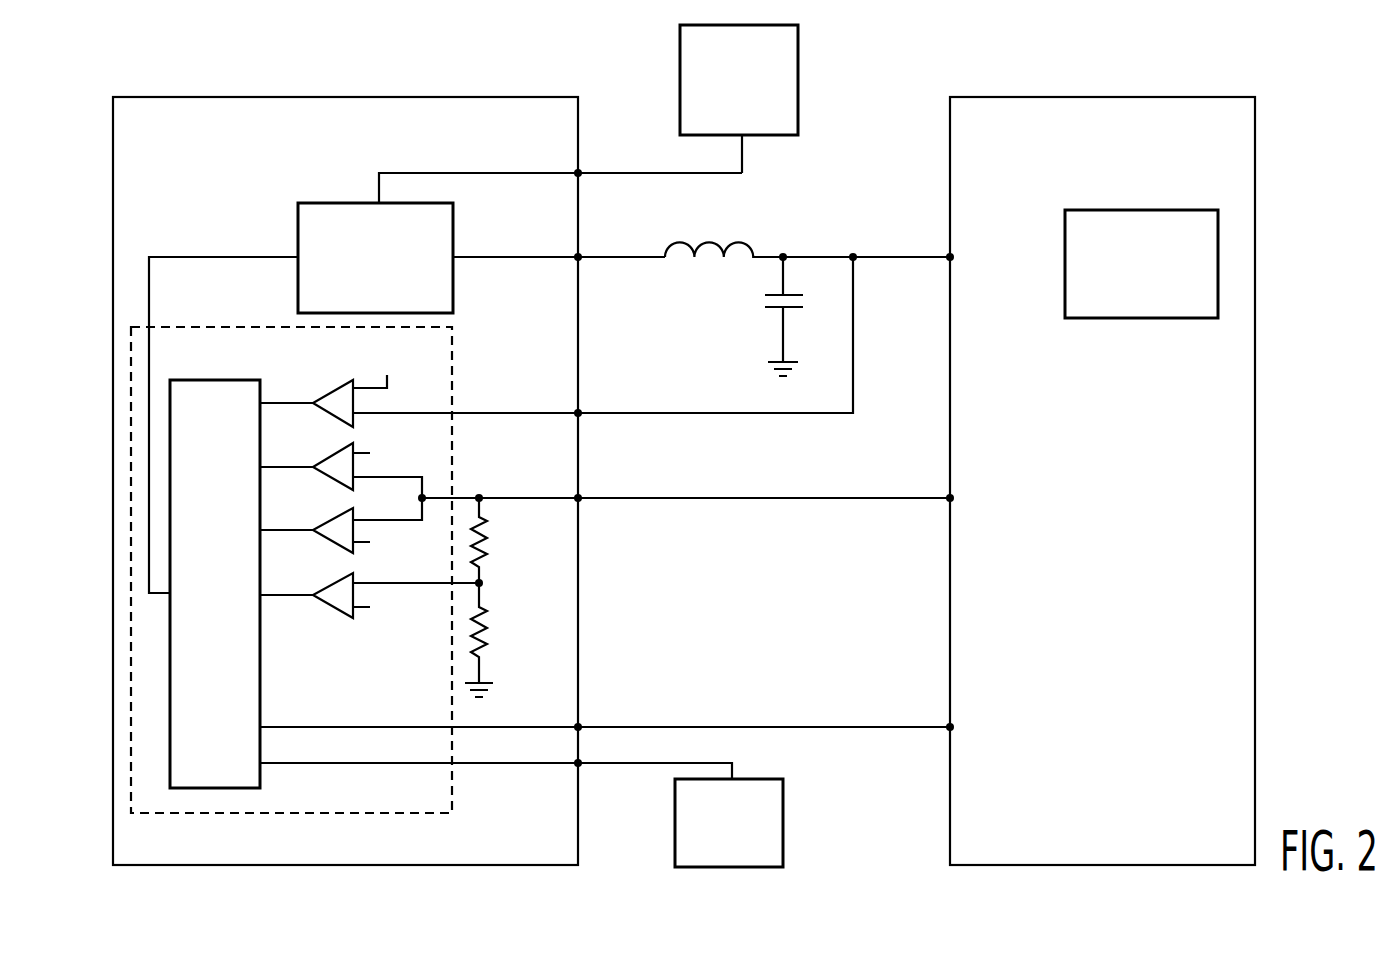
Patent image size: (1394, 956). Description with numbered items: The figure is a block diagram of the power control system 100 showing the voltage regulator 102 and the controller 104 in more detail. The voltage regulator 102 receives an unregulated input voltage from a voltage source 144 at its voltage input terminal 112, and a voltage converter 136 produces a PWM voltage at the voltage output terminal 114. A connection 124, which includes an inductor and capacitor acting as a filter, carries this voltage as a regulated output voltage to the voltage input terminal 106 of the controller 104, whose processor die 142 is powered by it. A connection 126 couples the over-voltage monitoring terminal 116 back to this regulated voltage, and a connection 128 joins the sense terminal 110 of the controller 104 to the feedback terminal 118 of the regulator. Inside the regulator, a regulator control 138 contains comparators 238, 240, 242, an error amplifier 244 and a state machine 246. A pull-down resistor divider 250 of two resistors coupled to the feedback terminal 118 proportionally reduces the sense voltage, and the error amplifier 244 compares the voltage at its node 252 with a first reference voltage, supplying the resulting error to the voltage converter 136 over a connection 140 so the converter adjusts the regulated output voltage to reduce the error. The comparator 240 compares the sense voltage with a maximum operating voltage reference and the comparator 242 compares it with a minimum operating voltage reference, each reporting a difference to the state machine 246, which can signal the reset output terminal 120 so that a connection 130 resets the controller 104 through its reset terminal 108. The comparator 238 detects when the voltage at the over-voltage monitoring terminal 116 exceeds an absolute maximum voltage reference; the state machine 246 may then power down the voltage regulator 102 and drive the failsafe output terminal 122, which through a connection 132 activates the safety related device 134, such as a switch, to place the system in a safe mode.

The power control system 100 is at (826, 102).
The voltage regulator 102 is at (157, 97).
The controller 104 is at (1215, 97).
The voltage input terminal 106 is at (952, 260).
The reset terminal 108 is at (952, 730).
The sense terminal 110 is at (952, 500).
The voltage input terminal 112 is at (576, 172).
The voltage output terminal 114 is at (580, 255).
The over-voltage monitoring terminal 116 is at (576, 411).
The feedback terminal 118 is at (576, 496).
The reset output terminal 120 is at (576, 725).
The failsafe output terminal 122 is at (576, 766).
The connection 124 is at (822, 257).
The connection 126 is at (828, 413).
The connection 128 is at (770, 499).
The connection 130 is at (820, 726).
The connection 132 is at (725, 762).
The safety related device 134 is at (746, 852).
The voltage converter 136 is at (397, 296).
The regulator control 138 is at (250, 327).
The connection 140 is at (200, 257).
The processor die 142 is at (1150, 318).
The voltage source 144 is at (760, 124).
The comparator 238 is at (348, 382).
The comparator 240 is at (340, 447).
The comparator 242 is at (340, 548).
The error amplifier 244 is at (340, 616).
The state machine 246 is at (237, 544).
The pull-down resistor divider 250 is at (516, 515).
The node 252 is at (477, 584).